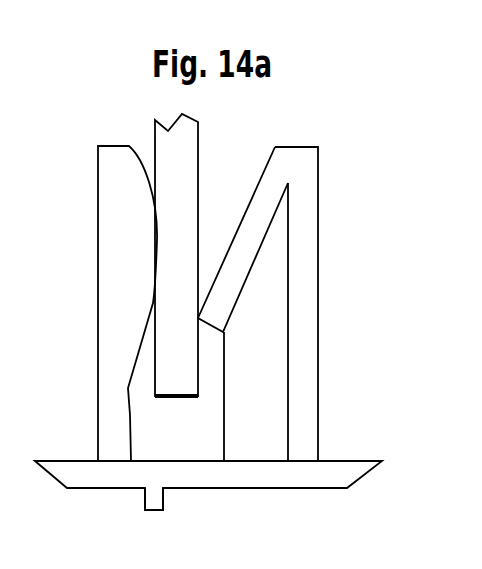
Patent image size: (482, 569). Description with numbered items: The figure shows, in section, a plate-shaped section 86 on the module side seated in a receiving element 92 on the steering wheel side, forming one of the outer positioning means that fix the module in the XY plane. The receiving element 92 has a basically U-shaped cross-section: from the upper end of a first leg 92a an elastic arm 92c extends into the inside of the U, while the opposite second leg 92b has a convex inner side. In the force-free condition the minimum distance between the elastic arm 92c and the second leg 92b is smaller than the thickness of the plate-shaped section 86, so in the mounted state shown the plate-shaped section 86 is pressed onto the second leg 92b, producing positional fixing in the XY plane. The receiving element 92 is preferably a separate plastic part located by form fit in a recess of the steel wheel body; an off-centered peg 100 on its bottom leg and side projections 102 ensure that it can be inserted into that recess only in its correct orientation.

The plate-shaped section 86 is at (173, 148).
The receiving element 92 is at (212, 340).
The first leg 92a is at (312, 320).
The second leg 92b is at (118, 300).
The elastic arm 92c is at (253, 240).
The off-centered peg 100 is at (148, 499).
The side projections 102 is at (77, 473).